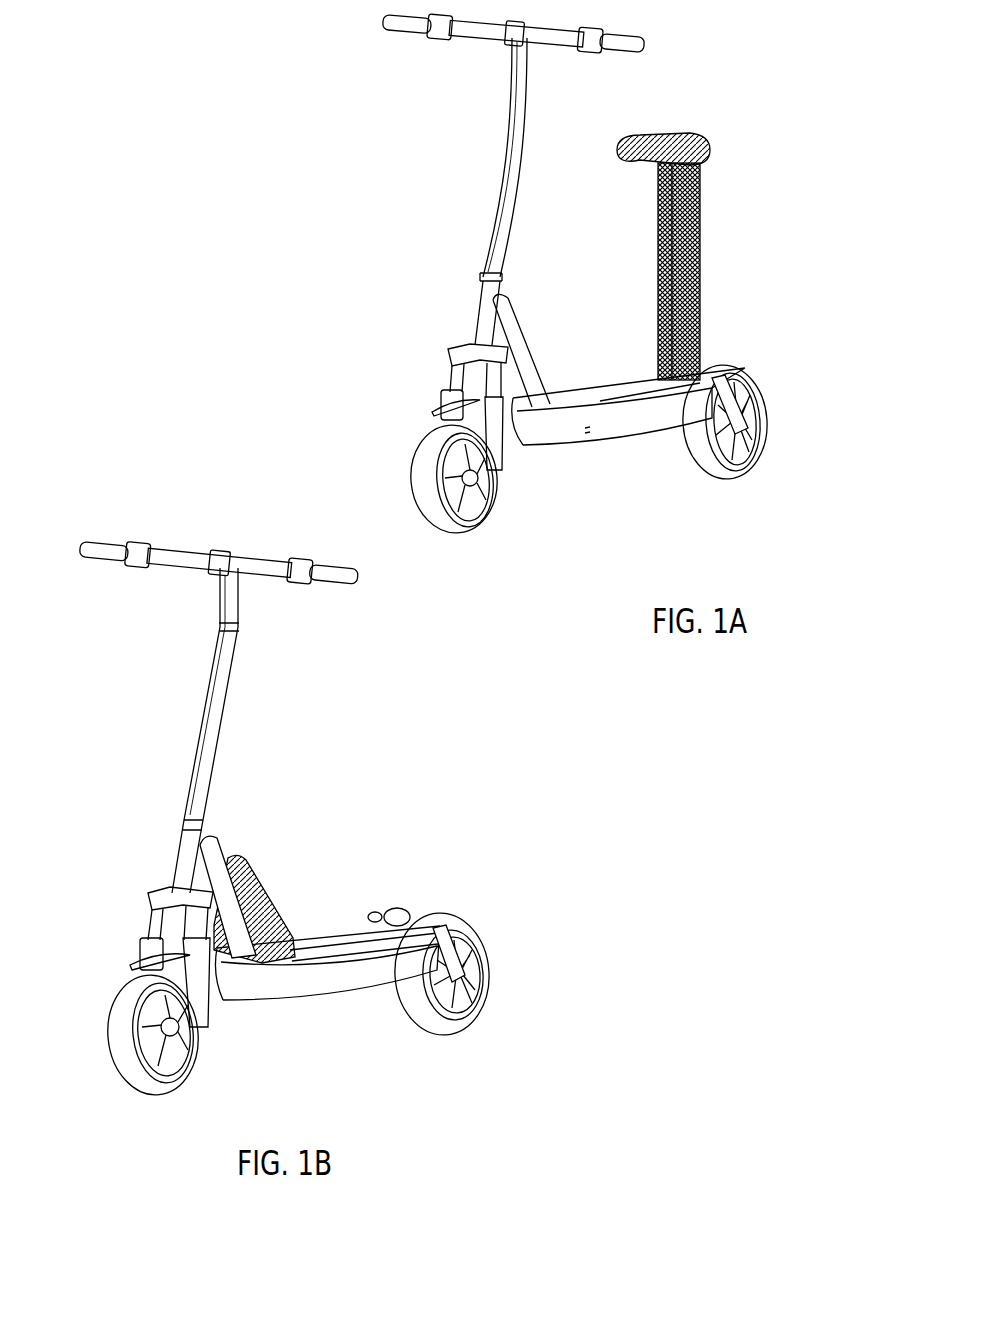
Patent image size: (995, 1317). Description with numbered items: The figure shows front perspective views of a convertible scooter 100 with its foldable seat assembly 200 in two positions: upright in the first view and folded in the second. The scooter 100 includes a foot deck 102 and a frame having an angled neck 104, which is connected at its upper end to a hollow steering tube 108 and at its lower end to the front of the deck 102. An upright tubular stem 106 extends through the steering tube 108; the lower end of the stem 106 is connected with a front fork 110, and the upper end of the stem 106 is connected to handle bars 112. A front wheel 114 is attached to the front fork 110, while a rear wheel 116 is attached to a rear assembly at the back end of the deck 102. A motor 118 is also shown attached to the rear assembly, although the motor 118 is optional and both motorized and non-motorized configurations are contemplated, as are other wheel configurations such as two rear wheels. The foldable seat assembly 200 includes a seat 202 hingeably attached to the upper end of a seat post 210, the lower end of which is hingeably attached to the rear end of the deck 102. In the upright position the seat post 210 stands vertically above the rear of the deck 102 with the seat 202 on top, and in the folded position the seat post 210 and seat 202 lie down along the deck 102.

In FIG. 1A, the convertible scooter 100 is at (246, 195).
In FIG. 1B, the convertible scooter 100 is at (580, 846).
In FIG. 1A, the foot deck 102 is at (627, 376).
In FIG. 1B, the foot deck 102 is at (327, 963).
In FIG. 1A, the angled neck 104 is at (525, 337).
In FIG. 1B, the angled neck 104 is at (228, 897).
In FIG. 1A, the tubular stem 106 is at (513, 140).
In FIG. 1B, the tubular stem 106 is at (211, 694).
In FIG. 1A, the steering tube 108 is at (481, 333).
In FIG. 1B, the steering tube 108 is at (187, 856).
In FIG. 1A, the front fork 110 is at (450, 386).
In FIG. 1B, the front fork 110 is at (171, 957).
In FIG. 1A, the handle bars 112 is at (394, 28).
In FIG. 1B, the handle bars 112 is at (219, 563).
In FIG. 1A, the front wheel 114 is at (481, 516).
In FIG. 1B, the front wheel 114 is at (153, 1035).
In FIG. 1A, the rear wheel 116 is at (762, 386).
In FIG. 1B, the rear wheel 116 is at (442, 974).
In FIG. 1B, the motor 118 is at (398, 908).
In FIG. 1A, the foldable seat assembly 200 is at (832, 150).
In FIG. 1B, the foldable seat assembly 200 is at (353, 760).
In FIG. 1A, the seat 202 is at (694, 138).
In FIG. 1B, the seat 202 is at (259, 900).
In FIG. 1A, the seat post 210 is at (700, 222).
In FIG. 1B, the seat post 210 is at (328, 930).